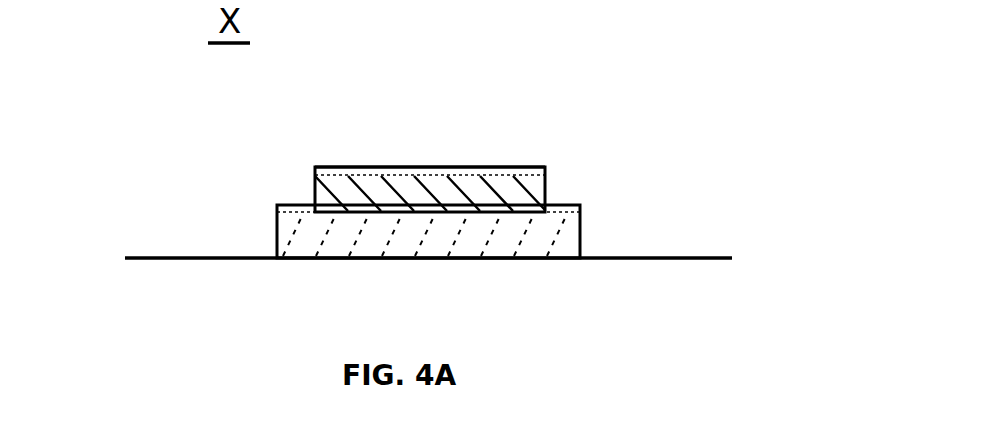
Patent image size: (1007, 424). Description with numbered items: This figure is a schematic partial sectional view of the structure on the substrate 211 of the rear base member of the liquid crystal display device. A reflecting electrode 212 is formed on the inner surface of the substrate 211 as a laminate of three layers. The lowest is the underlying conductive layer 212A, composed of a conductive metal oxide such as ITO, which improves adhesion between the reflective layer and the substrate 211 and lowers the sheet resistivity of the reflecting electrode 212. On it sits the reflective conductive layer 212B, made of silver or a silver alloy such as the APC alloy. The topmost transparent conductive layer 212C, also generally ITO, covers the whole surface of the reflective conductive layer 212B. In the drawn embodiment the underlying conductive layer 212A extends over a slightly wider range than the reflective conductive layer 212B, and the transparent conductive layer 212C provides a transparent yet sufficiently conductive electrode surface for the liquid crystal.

The substrate 211 is at (172, 258).
The reflecting electrode 212 is at (577, 189).
The underlying conductive layer 212A is at (581, 241).
The reflective conductive layer 212B is at (546, 203).
The transparent conductive layer 212C is at (546, 176).